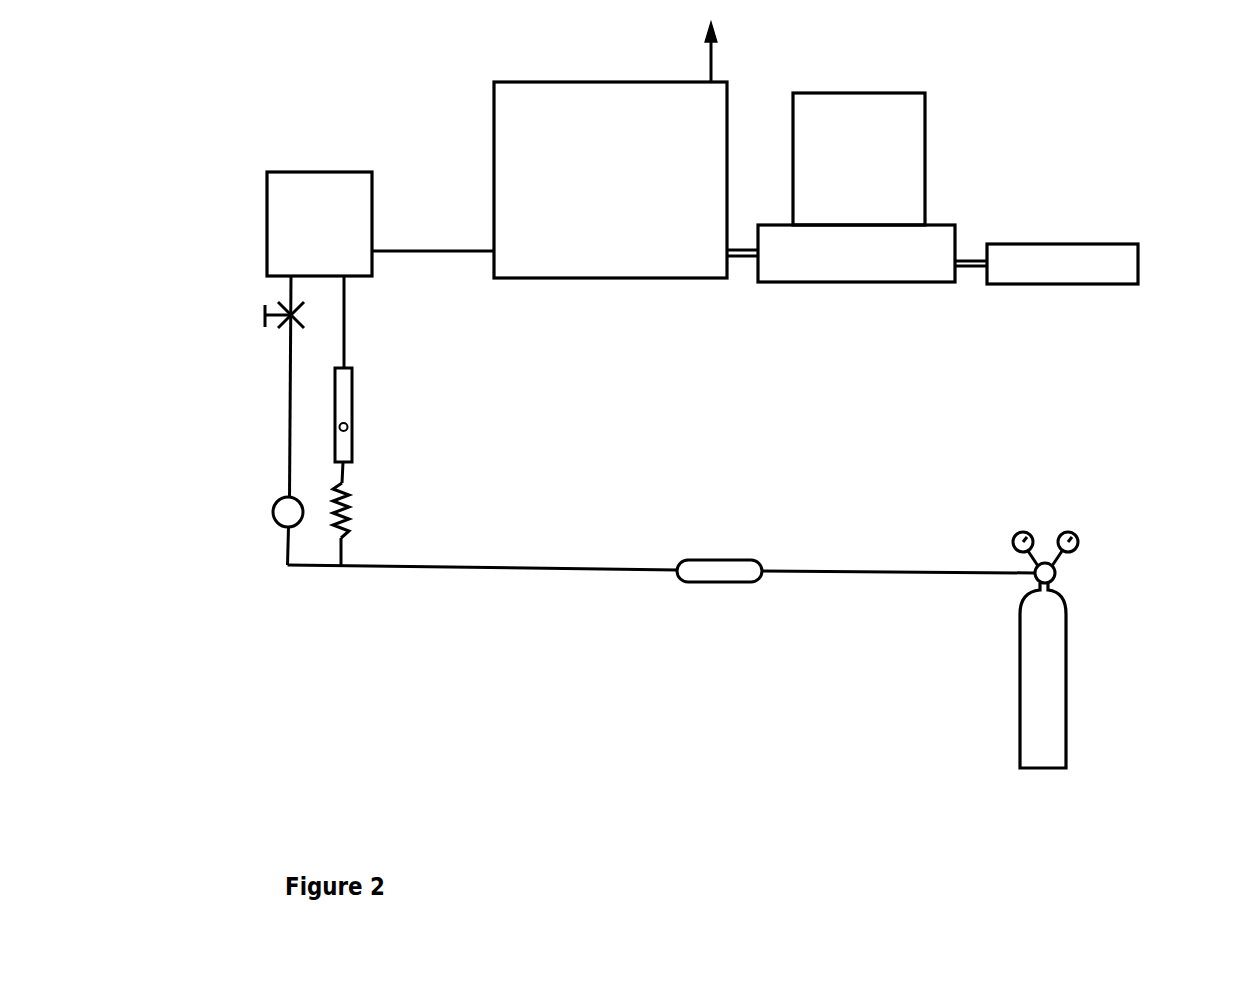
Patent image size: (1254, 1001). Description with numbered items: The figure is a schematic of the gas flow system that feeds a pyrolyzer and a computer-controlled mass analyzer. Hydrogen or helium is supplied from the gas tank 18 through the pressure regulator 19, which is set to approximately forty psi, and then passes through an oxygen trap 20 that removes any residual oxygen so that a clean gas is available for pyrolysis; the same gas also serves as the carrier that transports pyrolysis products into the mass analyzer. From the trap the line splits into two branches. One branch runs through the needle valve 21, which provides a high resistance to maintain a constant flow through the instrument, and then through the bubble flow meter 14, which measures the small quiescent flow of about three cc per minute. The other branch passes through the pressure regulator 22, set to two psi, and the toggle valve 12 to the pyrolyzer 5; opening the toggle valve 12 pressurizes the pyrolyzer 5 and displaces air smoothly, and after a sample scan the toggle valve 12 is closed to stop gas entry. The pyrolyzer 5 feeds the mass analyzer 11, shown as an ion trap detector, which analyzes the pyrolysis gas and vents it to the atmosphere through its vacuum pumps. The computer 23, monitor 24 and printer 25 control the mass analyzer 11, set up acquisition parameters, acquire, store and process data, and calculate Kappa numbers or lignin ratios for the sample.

The pyrolyzer 5 is at (329, 200).
The mass analyzer 11 is at (600, 80).
The toggle valve 12 is at (256, 313).
The bubble flow meter 14 is at (425, 415).
The gas tank 18 is at (1080, 701).
The pressure regulator 19 is at (1129, 574).
The oxygen trap 20 is at (743, 591).
The needle valve 21 is at (405, 514).
The pressure regulator 22 is at (223, 522).
The computer 23 is at (856, 253).
The monitor 24 is at (859, 159).
The printer 25 is at (1030, 244).